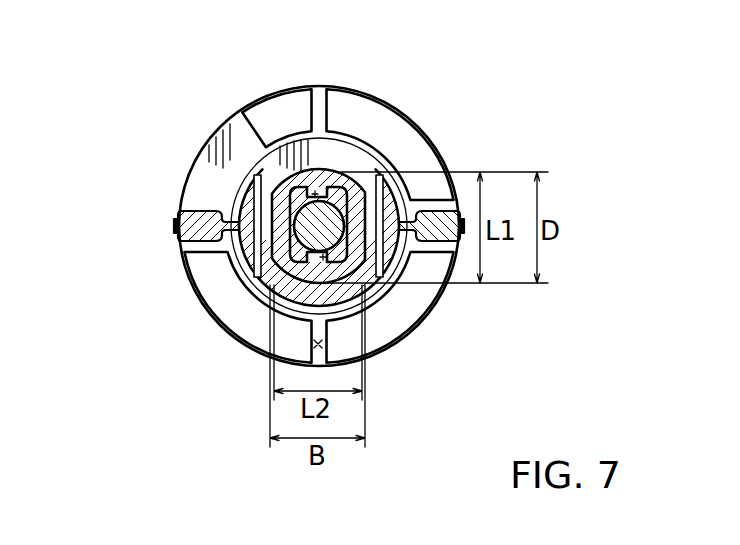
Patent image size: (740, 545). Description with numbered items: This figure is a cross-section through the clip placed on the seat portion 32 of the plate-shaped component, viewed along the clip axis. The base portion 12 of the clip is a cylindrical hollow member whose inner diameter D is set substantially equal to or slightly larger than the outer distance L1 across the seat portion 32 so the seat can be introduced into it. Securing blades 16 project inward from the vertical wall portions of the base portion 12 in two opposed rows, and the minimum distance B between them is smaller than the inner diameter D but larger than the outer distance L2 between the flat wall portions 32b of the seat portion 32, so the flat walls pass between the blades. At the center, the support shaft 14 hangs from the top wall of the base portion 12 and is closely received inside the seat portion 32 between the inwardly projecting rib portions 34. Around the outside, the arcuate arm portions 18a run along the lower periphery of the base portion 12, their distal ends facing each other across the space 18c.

The base portion 12 is at (261, 165).
The support shaft 14 is at (338, 197).
The securing blades 16 is at (379, 175).
The arcuate arm portions 18a is at (432, 166).
The space 18c is at (333, 354).
The seat portion 32 is at (288, 274).
The flat wall portions 32b is at (259, 220).
The rib portions 34 is at (279, 169).